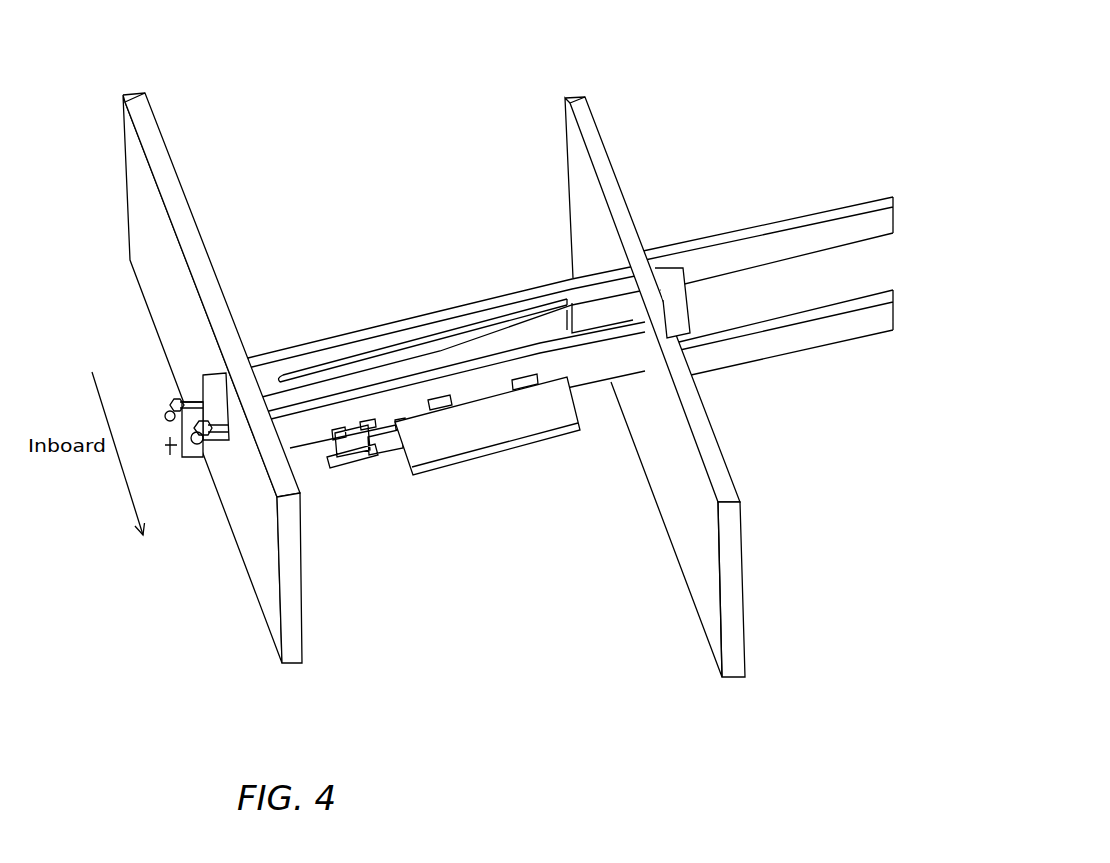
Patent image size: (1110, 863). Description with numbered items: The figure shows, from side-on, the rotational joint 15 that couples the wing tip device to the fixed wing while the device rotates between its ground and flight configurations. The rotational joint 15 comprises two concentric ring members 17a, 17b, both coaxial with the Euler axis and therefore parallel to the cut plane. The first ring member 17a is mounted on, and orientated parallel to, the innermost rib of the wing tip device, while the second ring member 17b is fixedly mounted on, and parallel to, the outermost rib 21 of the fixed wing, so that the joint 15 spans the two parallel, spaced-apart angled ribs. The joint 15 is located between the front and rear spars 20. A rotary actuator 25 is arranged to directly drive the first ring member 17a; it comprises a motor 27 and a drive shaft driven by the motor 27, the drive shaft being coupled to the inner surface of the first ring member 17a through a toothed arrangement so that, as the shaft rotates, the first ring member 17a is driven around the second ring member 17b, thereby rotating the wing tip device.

The rotational joint 15 is at (437, 350).
The first ring member 17a is at (479, 333).
The second ring member 17b is at (531, 343).
The front and rear spars 20 is at (585, 194).
The outermost rib 21 is at (295, 430).
The rotary actuator 25 is at (520, 458).
The motor 27 is at (583, 412).